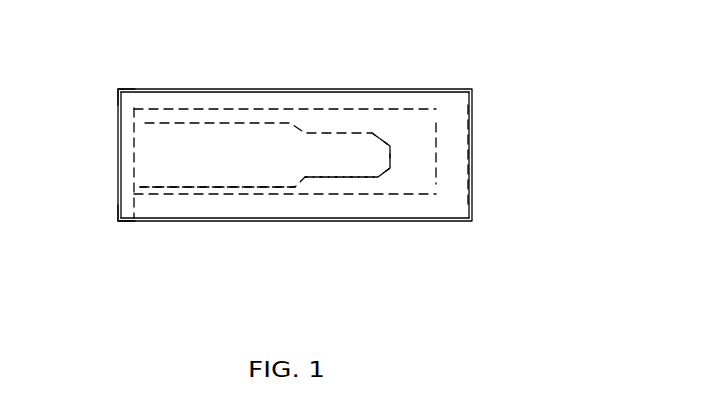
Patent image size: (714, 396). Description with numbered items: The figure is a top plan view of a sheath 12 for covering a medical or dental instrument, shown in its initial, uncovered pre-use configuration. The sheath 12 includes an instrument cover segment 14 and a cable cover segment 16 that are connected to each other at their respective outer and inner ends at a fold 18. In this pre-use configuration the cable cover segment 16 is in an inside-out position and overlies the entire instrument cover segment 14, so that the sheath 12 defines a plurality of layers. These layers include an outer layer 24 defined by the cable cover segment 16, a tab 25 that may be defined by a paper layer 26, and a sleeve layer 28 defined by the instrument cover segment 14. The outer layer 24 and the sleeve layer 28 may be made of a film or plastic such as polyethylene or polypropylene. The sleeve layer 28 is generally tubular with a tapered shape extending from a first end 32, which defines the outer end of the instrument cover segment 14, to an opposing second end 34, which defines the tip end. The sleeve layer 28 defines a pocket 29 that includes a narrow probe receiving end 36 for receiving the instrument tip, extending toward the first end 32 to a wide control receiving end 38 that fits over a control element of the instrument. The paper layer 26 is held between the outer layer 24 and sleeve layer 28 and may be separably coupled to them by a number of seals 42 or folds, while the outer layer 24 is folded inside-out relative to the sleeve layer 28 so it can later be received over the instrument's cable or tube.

The sheath 12 is at (506, 66).
The instrument cover segment 14 is at (293, 128).
The cable cover segment 16 is at (311, 78).
The fold 18 is at (118, 145).
The outer layer 24 is at (472, 106).
The tab 25 is at (402, 195).
The paper layer 26 is at (437, 177).
The sleeve layer 28 is at (354, 122).
The pocket 29 is at (380, 137).
The first end 32 is at (118, 234).
The second end 34 is at (472, 234).
The probe receiving end 36 is at (366, 178).
The control receiving end 38 is at (238, 187).
The seals 42 is at (108, 80).